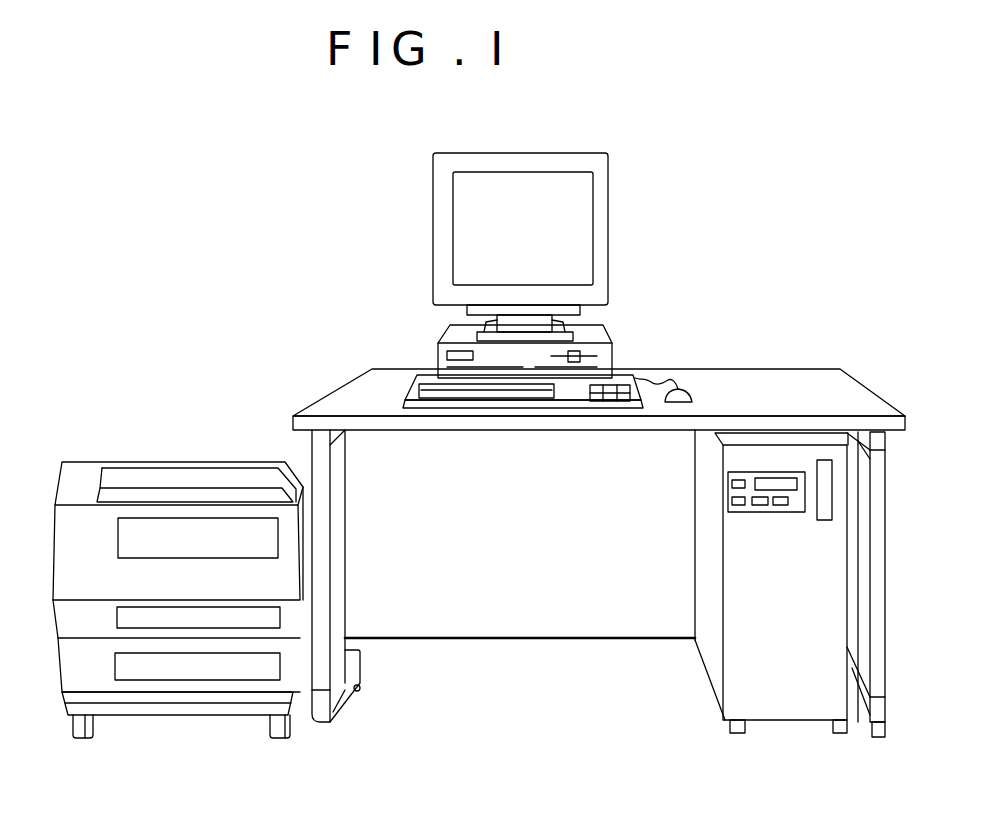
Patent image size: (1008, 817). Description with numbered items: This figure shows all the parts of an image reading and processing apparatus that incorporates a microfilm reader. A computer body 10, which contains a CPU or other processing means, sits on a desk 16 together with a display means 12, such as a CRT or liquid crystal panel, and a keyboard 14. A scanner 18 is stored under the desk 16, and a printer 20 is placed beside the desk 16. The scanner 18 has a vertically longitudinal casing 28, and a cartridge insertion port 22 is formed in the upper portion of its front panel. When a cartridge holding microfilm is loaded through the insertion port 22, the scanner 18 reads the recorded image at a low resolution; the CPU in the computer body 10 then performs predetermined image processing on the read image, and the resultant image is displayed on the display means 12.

The computer body 10 is at (610, 336).
The display means 12 is at (608, 202).
The keyboard 14 is at (403, 399).
The desk 16 is at (767, 369).
The scanner 18 is at (786, 704).
The printer 20 is at (165, 461).
The cartridge insertion port 22 is at (825, 508).
The casing 28 is at (742, 662).